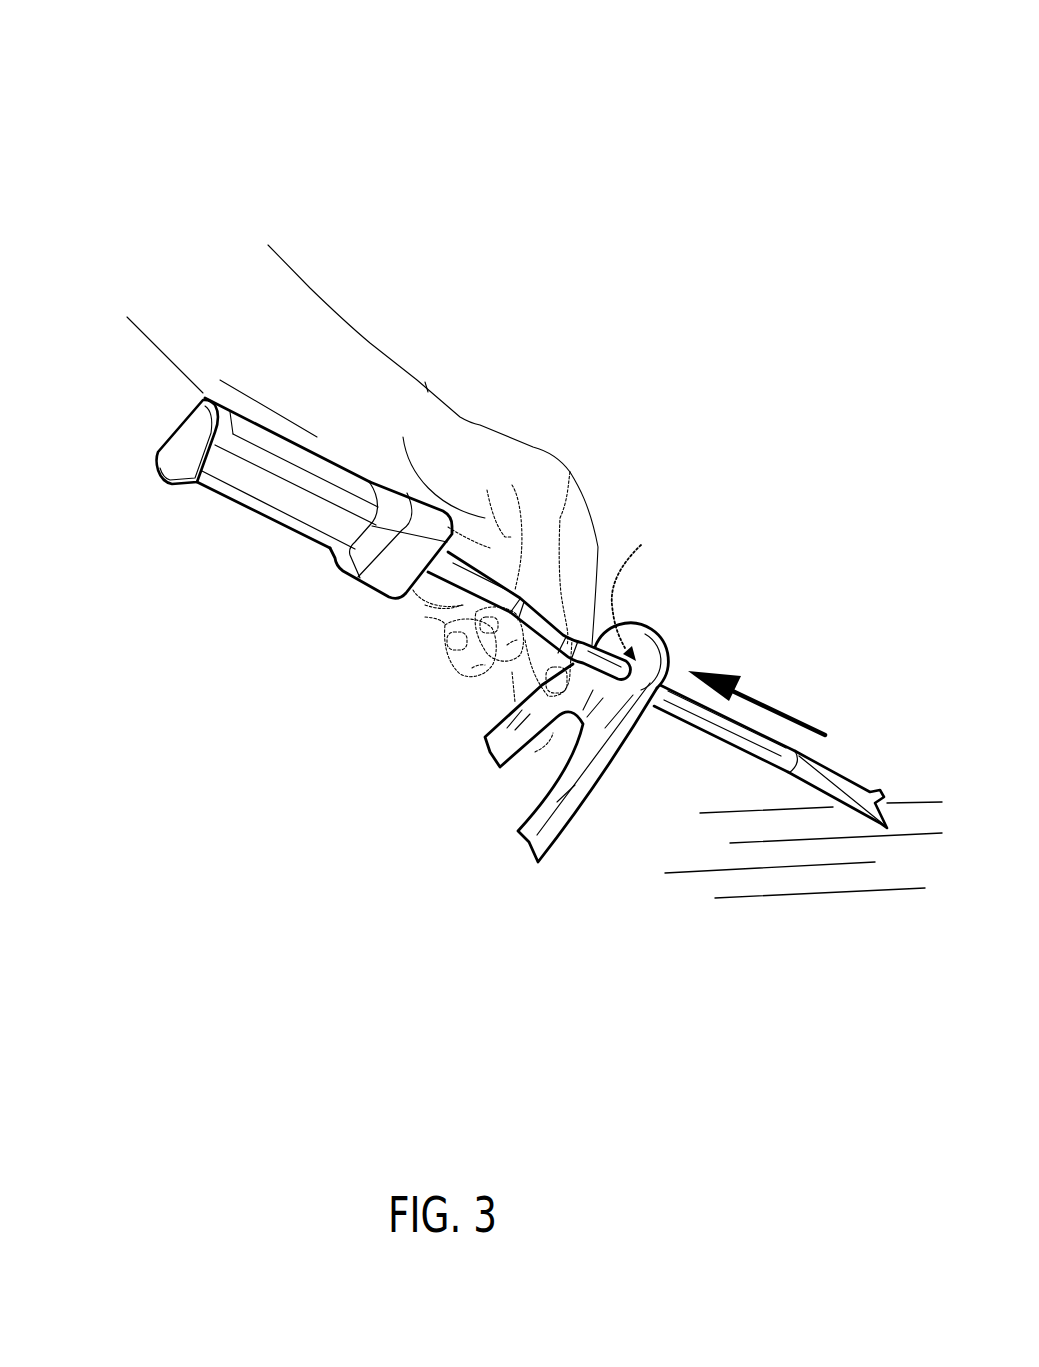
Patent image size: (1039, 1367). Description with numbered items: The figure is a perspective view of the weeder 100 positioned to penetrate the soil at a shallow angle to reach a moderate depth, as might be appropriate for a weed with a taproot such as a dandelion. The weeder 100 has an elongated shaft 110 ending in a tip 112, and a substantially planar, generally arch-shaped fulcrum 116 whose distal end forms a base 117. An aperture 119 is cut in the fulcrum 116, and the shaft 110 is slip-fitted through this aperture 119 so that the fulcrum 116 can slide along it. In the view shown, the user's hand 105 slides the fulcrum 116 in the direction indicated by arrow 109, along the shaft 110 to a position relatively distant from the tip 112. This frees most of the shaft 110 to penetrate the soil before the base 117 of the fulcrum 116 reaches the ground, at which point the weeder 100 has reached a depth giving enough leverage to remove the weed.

The weeder 100 is at (103, 42).
The user's hand 105 is at (365, 355).
The arrow 109 is at (773, 707).
The shaft 110 is at (593, 643).
The tip 112 is at (852, 790).
The fulcrum 116 is at (647, 648).
The base 117 is at (530, 840).
The aperture 119 is at (641, 545).